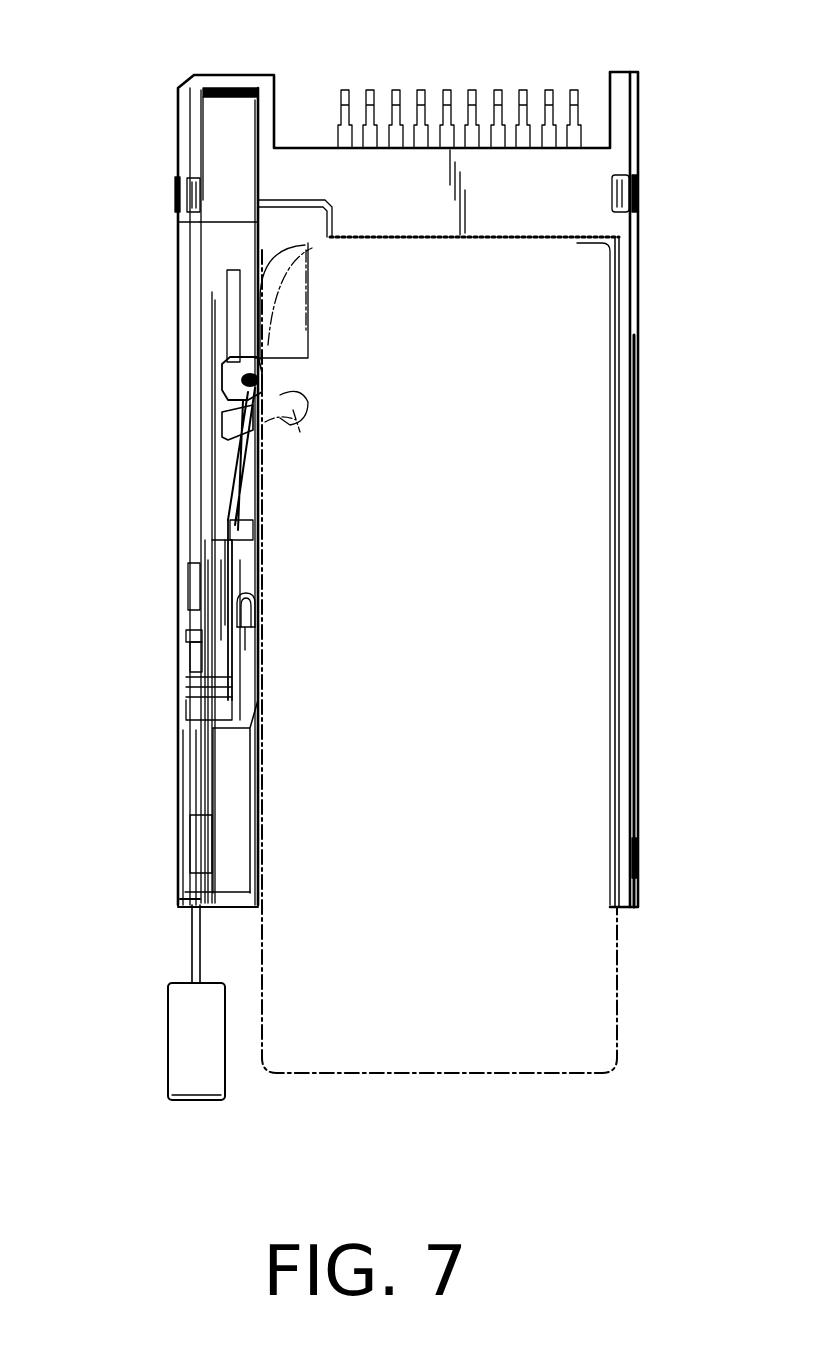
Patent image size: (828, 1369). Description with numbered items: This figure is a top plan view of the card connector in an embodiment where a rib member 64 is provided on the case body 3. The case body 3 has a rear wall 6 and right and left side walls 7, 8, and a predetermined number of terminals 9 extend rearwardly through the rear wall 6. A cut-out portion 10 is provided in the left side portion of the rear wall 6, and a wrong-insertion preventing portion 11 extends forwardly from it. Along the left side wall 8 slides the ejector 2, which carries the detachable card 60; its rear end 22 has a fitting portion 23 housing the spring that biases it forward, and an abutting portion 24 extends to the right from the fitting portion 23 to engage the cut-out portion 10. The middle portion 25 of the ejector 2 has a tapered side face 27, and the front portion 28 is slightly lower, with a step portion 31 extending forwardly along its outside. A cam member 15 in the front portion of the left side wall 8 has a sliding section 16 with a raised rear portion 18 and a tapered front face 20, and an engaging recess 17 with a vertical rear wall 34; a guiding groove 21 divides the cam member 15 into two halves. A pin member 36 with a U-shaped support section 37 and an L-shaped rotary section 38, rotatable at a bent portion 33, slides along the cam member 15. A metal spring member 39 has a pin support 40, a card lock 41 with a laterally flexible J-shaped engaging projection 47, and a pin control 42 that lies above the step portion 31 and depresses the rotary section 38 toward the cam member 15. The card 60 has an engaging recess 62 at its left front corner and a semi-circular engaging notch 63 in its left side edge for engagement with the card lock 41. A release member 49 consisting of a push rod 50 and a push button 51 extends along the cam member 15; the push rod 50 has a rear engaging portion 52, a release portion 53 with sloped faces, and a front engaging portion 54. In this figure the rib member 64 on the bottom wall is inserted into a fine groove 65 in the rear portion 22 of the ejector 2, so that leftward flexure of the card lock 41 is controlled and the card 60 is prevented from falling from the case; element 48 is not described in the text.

The ejector 2 is at (252, 108).
The case body 3 is at (655, 572).
The rear wall 6 is at (555, 178).
The right side wall 7 is at (640, 378).
The left side wall 8 is at (178, 273).
The terminals 9 is at (346, 90).
The cut-out portion 10 is at (256, 221).
The wrong-insertion preventing portion 11 is at (318, 199).
The cam member 15 is at (170, 812).
The sliding section 16 is at (178, 848).
The engaging recess 17 is at (217, 685).
The raised rear portion 18 is at (186, 742).
The tapered front face 20 is at (322, 758).
The guiding groove 21 is at (215, 817).
The rear end of the ejector 22 is at (184, 122).
The fitting portion 23 is at (220, 125).
The abutting portion 24 is at (305, 244).
The middle portion of the ejector 25 is at (190, 392).
The tapered side face 27 is at (262, 494).
The front portion of the ejector 28 is at (258, 710).
The step portion 31 is at (270, 692).
The bent portion 33 is at (325, 578).
The vertical rear wall 34 is at (188, 645).
The pin member 36 is at (266, 627).
The support section 37 is at (257, 617).
The rotary section 38 is at (322, 655).
The spring member 39 is at (258, 534).
The pin support 40 is at (226, 565).
The card lock 41 is at (255, 478).
The pin control 42 is at (195, 578).
The J-shaped engaging projection 47 is at (306, 407).
The latch 48 is at (193, 702).
The release member 49 is at (220, 1056).
The push rod 50 is at (212, 945).
The push button 51 is at (206, 1028).
The rear engaging portion 52 is at (221, 640).
The release portion 53 is at (210, 742).
The front engaging portion 54 is at (200, 930).
The card 60 is at (622, 1040).
The engaging recess 62 is at (282, 352).
The engaging notch 63 is at (304, 420).
The rib member 64 is at (218, 441).
The fine groove 65 is at (229, 323).